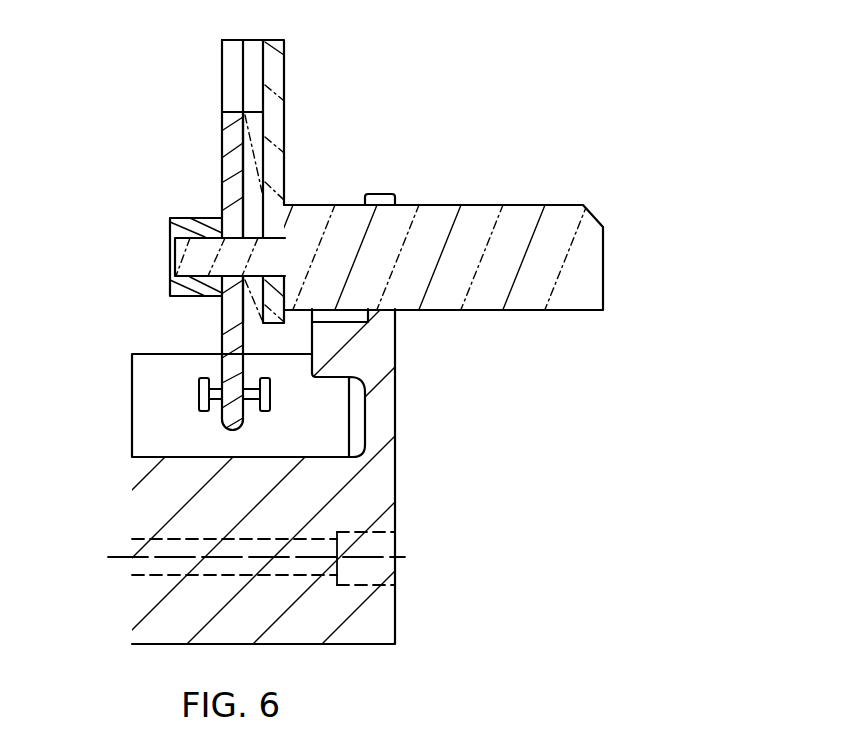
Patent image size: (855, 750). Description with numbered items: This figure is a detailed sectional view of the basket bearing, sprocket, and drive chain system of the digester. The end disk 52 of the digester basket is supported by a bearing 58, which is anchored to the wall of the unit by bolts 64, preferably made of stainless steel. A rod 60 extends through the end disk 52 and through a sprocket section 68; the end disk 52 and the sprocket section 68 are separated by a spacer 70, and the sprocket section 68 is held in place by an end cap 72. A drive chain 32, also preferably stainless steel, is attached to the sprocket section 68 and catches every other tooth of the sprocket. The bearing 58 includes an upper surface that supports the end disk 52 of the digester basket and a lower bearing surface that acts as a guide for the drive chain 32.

The drive chain 32 is at (198, 396).
The end disk 52 is at (284, 158).
The bearing 58 is at (132, 512).
The rod 60 is at (438, 205).
The bolts 64 is at (393, 570).
The sprocket section 68 is at (222, 325).
The spacer 70 is at (262, 193).
The end cap 72 is at (180, 218).